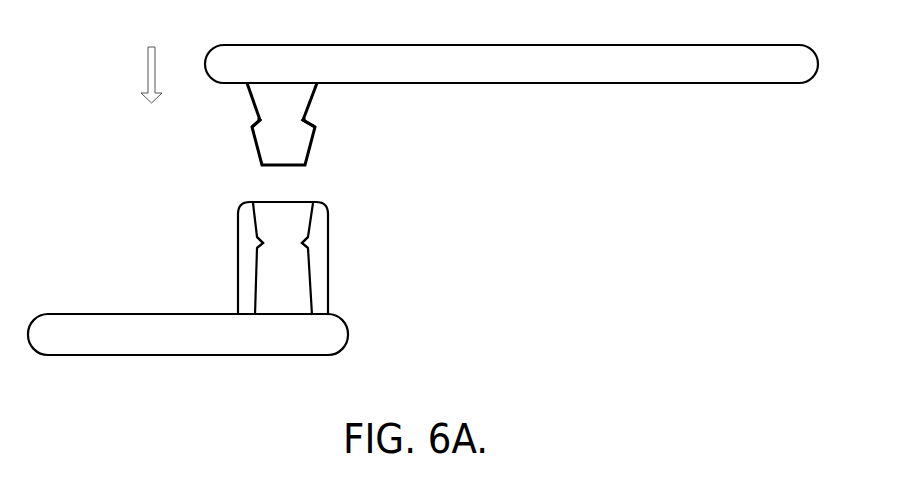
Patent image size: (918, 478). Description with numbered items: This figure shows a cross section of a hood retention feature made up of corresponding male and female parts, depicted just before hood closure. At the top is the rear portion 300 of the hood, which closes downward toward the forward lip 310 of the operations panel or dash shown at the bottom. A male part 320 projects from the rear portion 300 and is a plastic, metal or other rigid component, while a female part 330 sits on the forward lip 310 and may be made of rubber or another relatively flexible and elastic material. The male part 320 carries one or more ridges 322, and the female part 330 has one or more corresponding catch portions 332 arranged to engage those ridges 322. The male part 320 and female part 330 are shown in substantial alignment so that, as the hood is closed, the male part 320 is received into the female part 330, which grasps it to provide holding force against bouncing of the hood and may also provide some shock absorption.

The rear portion 300 is at (487, 50).
The forward lip 310 is at (277, 345).
The male part 320 is at (308, 143).
The ridges 322 is at (307, 118).
The female part 330 is at (327, 270).
The catch portions 332 is at (303, 242).